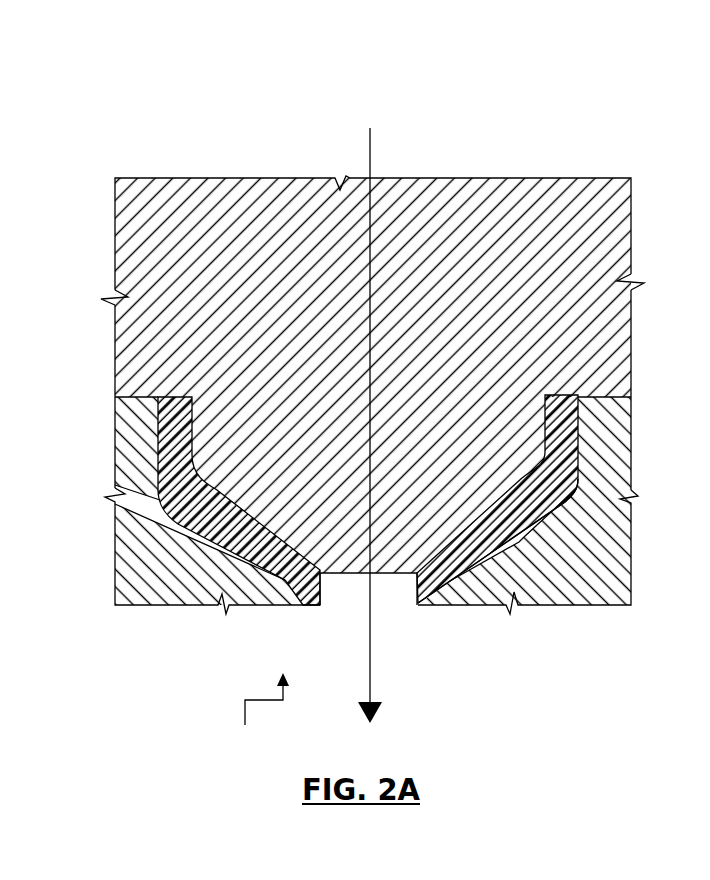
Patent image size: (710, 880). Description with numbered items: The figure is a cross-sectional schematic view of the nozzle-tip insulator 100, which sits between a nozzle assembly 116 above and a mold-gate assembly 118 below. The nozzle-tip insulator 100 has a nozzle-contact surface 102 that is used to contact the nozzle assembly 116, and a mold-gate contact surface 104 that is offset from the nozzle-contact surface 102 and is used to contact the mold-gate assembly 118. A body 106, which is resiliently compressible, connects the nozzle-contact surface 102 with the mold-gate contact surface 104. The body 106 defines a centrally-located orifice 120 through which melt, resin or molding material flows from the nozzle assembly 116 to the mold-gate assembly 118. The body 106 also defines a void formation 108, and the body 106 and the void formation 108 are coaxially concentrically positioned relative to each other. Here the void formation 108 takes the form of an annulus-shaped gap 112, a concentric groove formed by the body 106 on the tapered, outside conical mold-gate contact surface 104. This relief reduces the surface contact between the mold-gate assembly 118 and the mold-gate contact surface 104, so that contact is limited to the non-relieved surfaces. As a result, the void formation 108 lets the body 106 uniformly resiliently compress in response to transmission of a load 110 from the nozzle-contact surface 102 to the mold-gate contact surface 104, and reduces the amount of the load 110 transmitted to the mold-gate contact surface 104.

The nozzle-tip insulator 100 is at (563, 400).
The nozzle-contact surface 102 is at (238, 512).
The mold-gate contact surface 104 is at (576, 491).
The body 106 is at (580, 482).
The void formation 108 is at (259, 715).
The load 110 is at (374, 128).
The annulus-shaped gap 112 is at (243, 555).
The nozzle assembly 116 is at (293, 182).
The mold-gate assembly 118 is at (620, 592).
The orifice 120 is at (390, 598).